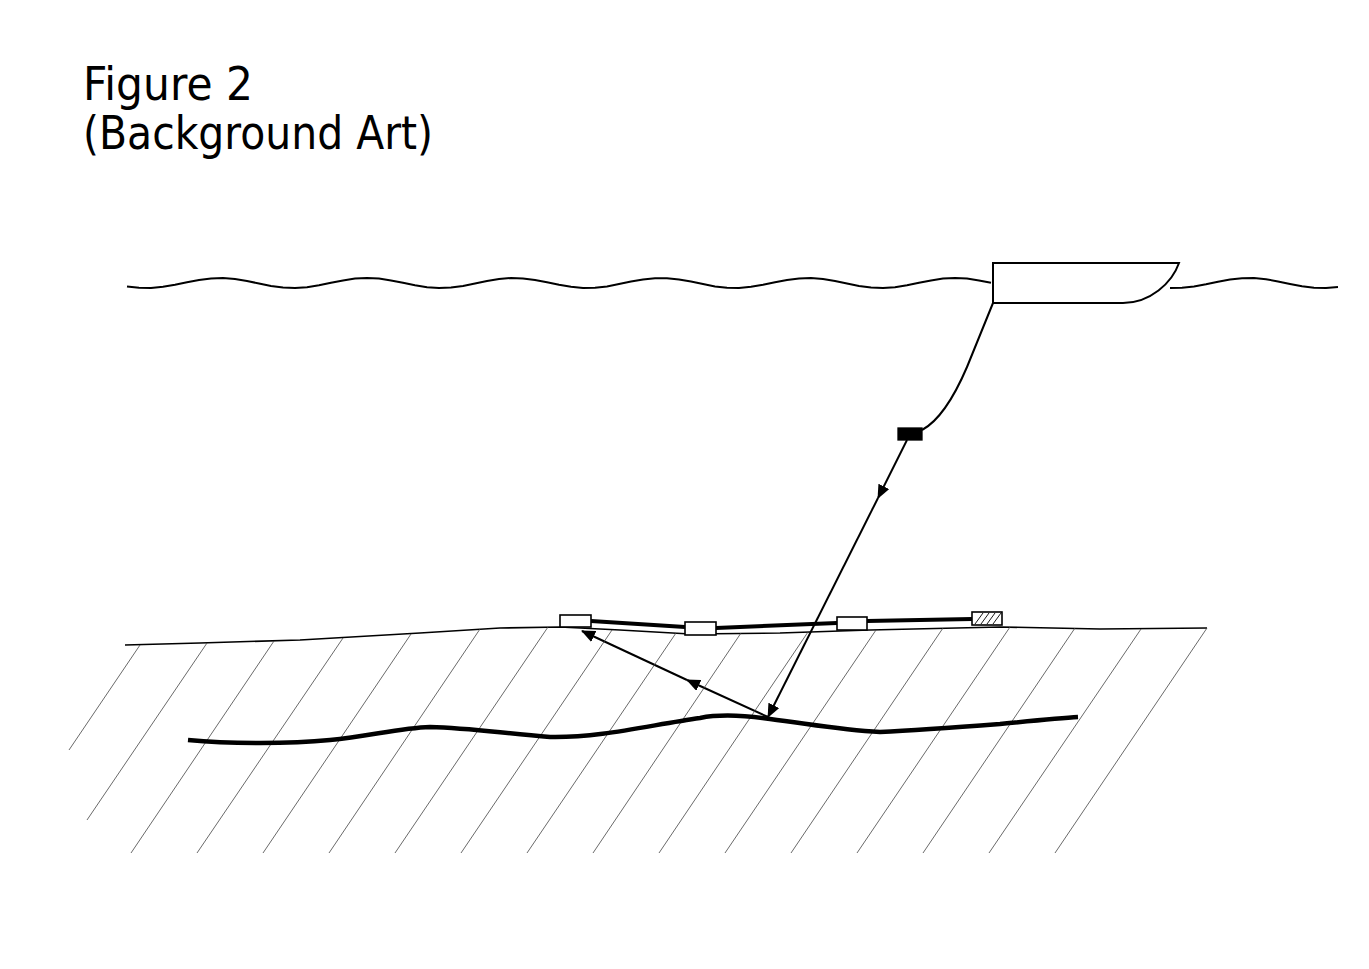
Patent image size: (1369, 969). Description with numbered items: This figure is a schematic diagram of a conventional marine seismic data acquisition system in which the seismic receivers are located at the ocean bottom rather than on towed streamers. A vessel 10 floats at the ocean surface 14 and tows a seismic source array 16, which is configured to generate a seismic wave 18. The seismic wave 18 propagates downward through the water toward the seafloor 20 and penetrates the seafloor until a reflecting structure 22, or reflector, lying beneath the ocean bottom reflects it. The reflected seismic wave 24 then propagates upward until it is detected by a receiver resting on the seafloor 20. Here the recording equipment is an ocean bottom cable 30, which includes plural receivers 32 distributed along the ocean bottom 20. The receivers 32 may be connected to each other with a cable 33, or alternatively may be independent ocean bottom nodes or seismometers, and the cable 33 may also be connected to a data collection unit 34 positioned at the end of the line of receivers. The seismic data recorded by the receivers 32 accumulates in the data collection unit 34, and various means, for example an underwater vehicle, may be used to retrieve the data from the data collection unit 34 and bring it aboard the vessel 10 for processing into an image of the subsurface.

The vessel 10 is at (1176, 214).
The ocean surface 14 is at (181, 283).
The seismic source array 16 is at (915, 440).
The seismic wave 18 is at (848, 550).
The seafloor 20 is at (1076, 628).
The reflecting structure 22 is at (1037, 717).
The reflected seismic wave 24 is at (629, 651).
The ocean bottom cable 30 is at (659, 617).
The receivers 32 is at (580, 614).
The cable 33 is at (928, 620).
The data collection unit 34 is at (990, 612).